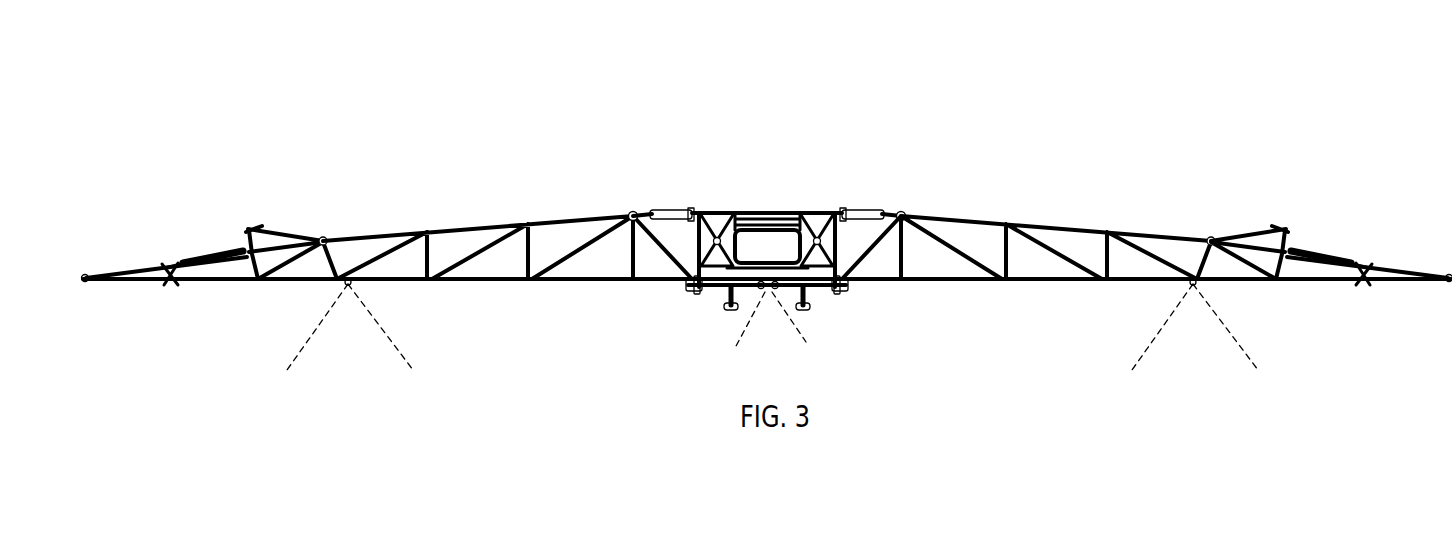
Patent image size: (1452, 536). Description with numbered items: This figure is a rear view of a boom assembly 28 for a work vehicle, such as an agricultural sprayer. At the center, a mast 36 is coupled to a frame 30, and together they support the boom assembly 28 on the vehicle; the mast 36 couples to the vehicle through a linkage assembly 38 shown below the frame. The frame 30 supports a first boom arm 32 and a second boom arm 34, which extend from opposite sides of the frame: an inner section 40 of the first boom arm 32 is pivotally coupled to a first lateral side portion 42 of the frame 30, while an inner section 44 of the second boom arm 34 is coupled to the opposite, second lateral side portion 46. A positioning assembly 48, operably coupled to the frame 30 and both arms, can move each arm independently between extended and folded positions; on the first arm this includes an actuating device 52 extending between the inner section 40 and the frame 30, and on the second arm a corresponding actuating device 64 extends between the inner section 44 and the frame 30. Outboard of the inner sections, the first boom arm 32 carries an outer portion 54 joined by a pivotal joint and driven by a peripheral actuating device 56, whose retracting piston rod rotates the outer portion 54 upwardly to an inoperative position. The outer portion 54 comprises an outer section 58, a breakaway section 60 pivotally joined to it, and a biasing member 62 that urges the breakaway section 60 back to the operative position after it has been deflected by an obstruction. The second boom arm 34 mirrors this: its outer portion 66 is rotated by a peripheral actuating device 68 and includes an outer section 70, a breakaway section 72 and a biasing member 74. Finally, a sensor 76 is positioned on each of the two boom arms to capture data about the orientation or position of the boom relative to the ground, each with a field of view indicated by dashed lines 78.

The boom assembly 28 is at (364, 103).
The frame 30 is at (767, 212).
The first boom arm 32 is at (479, 218).
The second boom arm 34 is at (1076, 210).
The mast 36 is at (712, 212).
The linkage assembly 38 is at (734, 302).
The inner section 40 is at (508, 278).
The first lateral side portion 42 is at (689, 209).
The inner section 44 is at (1042, 280).
The second lateral side portion 46 is at (855, 212).
The positioning assembly 48 is at (883, 215).
The actuating device 52 is at (716, 291).
The outer portion 54 is at (259, 289).
The peripheral actuating device 56 is at (305, 238).
The outer section 58 is at (243, 250).
The breakaway section 60 is at (122, 268).
The biasing member 62 is at (210, 252).
The actuating device 64 is at (822, 294).
The outer portion 66 is at (1331, 263).
The peripheral actuating device 68 is at (1237, 236).
The outer section 70 is at (1311, 252).
The breakaway section 72 is at (1413, 265).
The biasing member 74 is at (1333, 246).
The sensor 76 is at (349, 285).
The dashed lines 78 is at (318, 325).